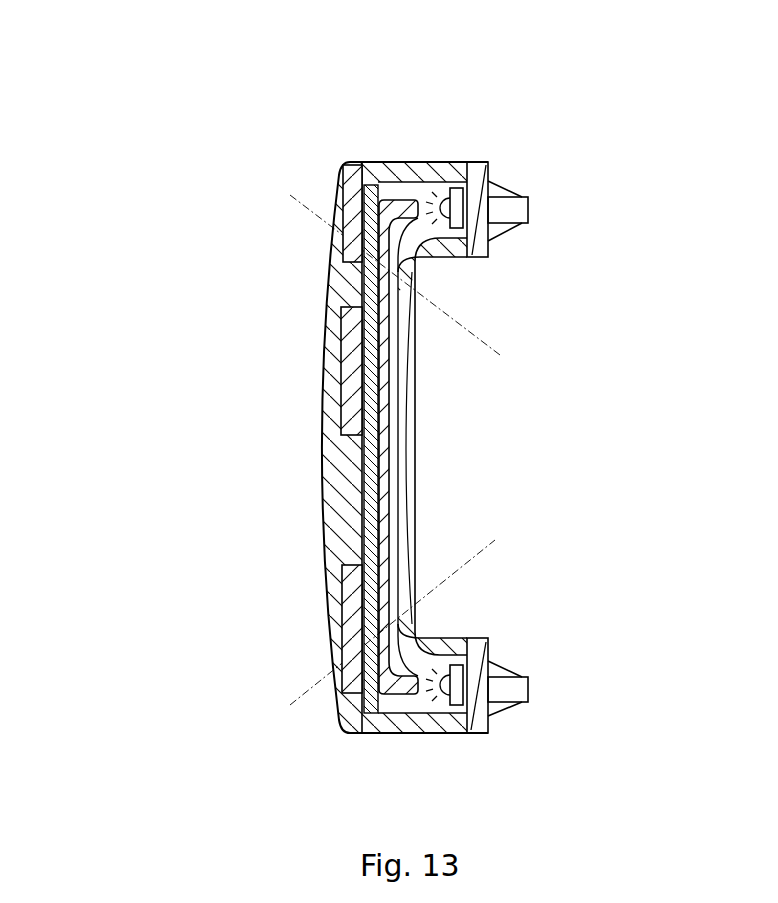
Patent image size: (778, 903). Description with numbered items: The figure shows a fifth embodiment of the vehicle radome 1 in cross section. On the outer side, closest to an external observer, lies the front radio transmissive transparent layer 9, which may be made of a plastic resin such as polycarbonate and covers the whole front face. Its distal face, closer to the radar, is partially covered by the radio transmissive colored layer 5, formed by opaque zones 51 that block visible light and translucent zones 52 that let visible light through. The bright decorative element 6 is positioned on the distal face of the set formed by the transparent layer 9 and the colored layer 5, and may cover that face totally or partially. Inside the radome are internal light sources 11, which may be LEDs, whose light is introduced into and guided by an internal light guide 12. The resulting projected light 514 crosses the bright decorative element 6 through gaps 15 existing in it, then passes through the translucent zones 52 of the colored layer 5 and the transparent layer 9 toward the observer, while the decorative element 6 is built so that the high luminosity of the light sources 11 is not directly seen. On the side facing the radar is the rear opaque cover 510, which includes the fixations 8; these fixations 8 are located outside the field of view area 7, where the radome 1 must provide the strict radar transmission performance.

The radome 1 is at (452, 144).
The radio transmissive colored layer 5 is at (340, 208).
The opaque zones 51 is at (345, 695).
The translucent zones 52 is at (347, 387).
The bright decorative element 6 is at (345, 272).
The field of view area 7 is at (458, 452).
The fixations 8 is at (512, 672).
The front radio transmissive transparent layer 9 is at (340, 360).
The internal light sources 11 is at (460, 196).
The internal light guide 12 is at (386, 196).
The gaps 15 is at (340, 304).
The rear opaque cover 510 is at (478, 715).
The projected light 514 is at (368, 291).